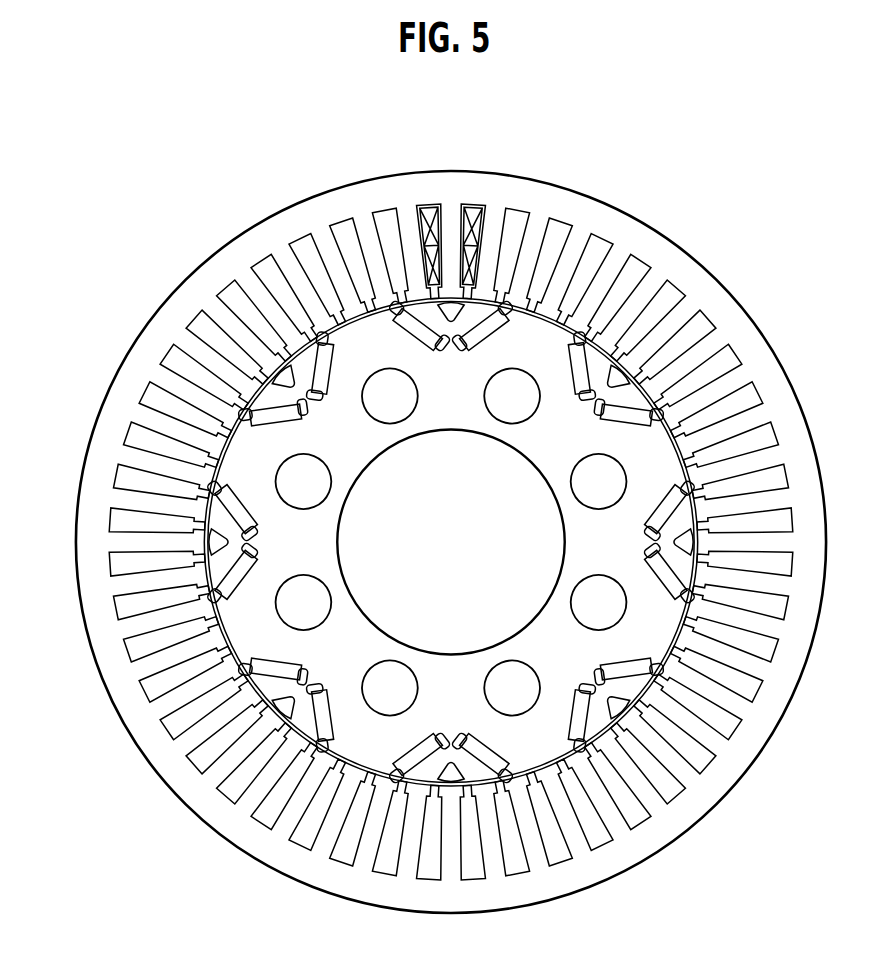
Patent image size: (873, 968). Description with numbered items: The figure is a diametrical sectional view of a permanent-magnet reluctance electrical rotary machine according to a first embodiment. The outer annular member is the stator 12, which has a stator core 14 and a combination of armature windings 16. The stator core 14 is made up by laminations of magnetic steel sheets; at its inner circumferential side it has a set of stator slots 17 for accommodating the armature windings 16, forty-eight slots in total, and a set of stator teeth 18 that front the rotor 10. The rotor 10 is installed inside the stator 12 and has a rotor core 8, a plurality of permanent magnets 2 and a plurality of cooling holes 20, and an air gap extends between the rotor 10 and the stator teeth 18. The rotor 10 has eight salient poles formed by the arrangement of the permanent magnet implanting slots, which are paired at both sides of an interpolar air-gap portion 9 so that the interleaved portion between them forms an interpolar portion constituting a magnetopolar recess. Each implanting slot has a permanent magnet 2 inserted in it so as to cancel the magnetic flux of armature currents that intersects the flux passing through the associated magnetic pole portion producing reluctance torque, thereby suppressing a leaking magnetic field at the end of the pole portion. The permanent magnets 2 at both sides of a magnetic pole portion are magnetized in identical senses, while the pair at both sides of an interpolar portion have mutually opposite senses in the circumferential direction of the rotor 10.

The permanent magnet 2 is at (665, 572).
The rotor core 8 is at (456, 541).
The stator teeth 9 is at (633, 708).
The rotor 10 is at (372, 460).
The stator 12 is at (157, 313).
The stator core 14 is at (419, 515).
The armature windings 16 is at (475, 212).
The stator slots 17 is at (451, 499).
The stator teeth 18 is at (300, 285).
The cooling holes 20 is at (512, 677).